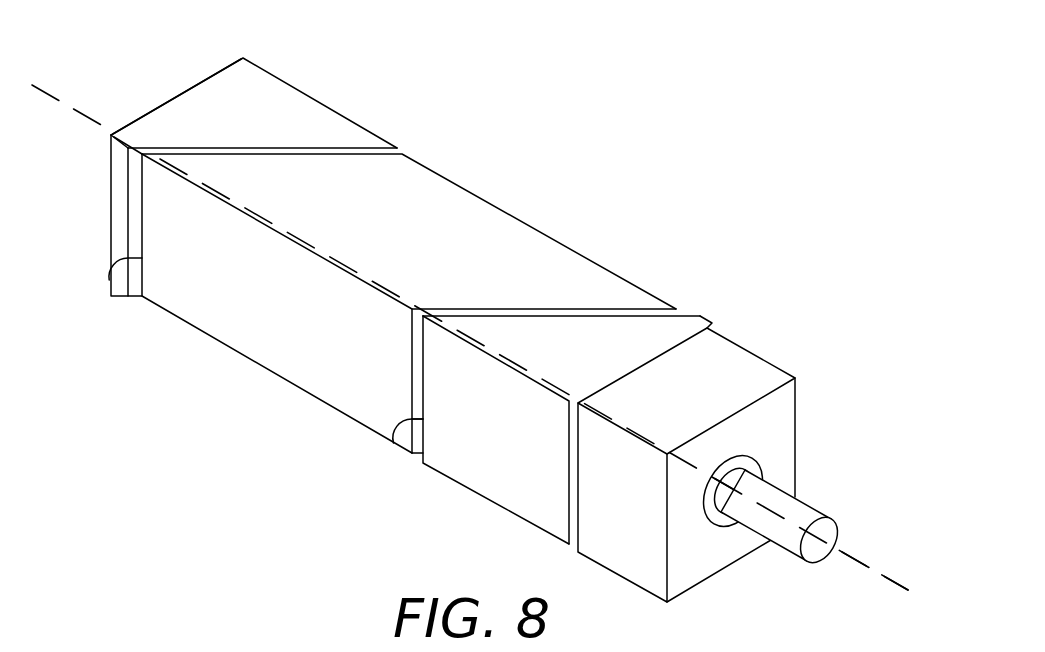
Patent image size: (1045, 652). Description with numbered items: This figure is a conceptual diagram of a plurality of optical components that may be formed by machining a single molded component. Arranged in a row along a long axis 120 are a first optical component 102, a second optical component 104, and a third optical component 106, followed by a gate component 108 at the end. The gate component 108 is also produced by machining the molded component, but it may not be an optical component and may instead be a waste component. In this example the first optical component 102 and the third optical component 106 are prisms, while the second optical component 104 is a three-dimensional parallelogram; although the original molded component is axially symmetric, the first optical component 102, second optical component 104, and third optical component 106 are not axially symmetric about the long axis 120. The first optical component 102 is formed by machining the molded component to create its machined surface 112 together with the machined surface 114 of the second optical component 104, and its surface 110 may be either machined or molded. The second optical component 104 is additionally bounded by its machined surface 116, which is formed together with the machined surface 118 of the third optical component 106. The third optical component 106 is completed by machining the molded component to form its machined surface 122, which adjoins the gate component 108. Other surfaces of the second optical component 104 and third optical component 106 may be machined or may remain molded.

The first optical component 102 is at (285, 98).
The second optical component 104 is at (487, 218).
The third optical component 106 is at (700, 320).
The gate component 108 is at (782, 430).
The surface 110 is at (203, 81).
The machined surface 112 is at (360, 147).
The machined surface 114 is at (109, 280).
The machined surface 116 is at (668, 308).
The machined surface 118 is at (394, 443).
The long axis 120 is at (840, 549).
The machined surface 122 is at (712, 324).